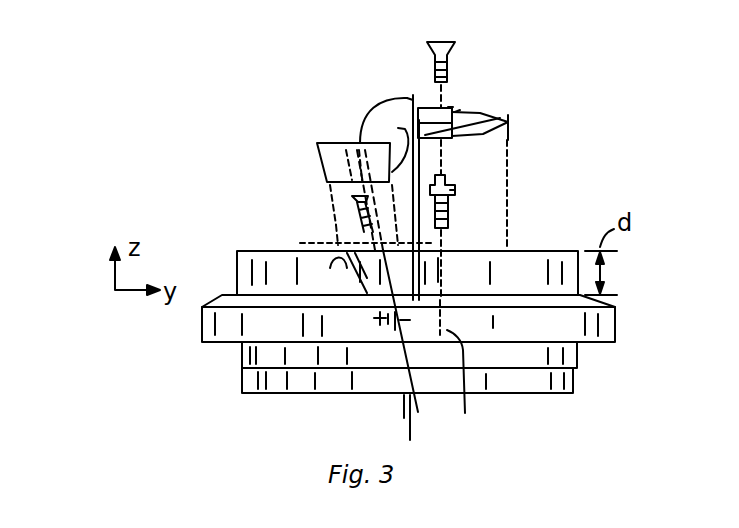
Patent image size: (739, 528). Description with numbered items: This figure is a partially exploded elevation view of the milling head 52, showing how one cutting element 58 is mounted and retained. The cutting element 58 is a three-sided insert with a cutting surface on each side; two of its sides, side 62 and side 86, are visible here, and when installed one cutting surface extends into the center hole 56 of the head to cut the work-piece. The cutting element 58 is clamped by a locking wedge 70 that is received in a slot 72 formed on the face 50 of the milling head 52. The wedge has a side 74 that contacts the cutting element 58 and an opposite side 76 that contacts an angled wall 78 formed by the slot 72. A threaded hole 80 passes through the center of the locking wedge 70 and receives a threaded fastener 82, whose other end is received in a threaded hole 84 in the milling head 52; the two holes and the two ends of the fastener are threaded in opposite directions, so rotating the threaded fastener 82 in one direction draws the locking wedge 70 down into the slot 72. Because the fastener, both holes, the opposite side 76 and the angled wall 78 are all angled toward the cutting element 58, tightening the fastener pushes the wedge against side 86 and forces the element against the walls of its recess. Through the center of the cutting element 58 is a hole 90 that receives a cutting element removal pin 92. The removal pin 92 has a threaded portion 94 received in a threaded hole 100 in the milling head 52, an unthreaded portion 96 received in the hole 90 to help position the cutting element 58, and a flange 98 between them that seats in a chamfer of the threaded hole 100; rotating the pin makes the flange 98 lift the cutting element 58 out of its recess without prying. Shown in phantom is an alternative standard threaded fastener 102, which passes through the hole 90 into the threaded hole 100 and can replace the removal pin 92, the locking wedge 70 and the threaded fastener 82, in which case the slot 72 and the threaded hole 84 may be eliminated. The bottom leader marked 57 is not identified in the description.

The face 50 is at (535, 250).
The milling head 52 is at (615, 322).
The center hole 56 is at (533, 396).
The lower rod portion 57 is at (410, 414).
The cutting element 58 is at (460, 110).
The side of cutting element 62 is at (462, 113).
The locking wedge 70 is at (332, 146).
The slot 72 is at (418, 412).
The side of locking wedge 74 is at (392, 143).
The opposite side of locking wedge 76 is at (322, 163).
The angled wall 78 is at (347, 273).
The threaded hole 80 is at (389, 194).
The threaded fastener 82 is at (355, 216).
The threaded hole 84 is at (380, 315).
The side of cutting element 86 is at (413, 95).
The hole 90 is at (453, 107).
The cutting element removal pin 92 is at (493, 192).
The threaded portion 94 is at (448, 214).
The unthreaded portion 96 is at (445, 180).
The flange 98 is at (455, 190).
The threaded hole 100 is at (465, 413).
The standard threaded fastener 102 is at (447, 38).